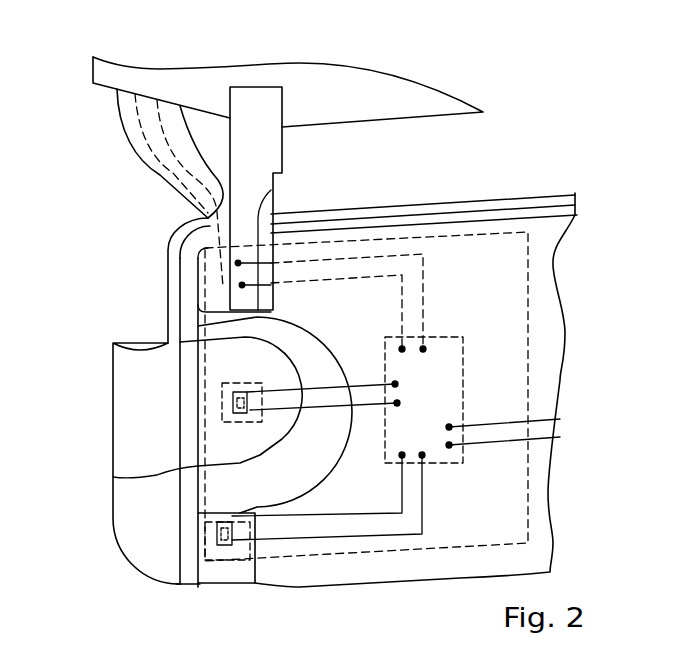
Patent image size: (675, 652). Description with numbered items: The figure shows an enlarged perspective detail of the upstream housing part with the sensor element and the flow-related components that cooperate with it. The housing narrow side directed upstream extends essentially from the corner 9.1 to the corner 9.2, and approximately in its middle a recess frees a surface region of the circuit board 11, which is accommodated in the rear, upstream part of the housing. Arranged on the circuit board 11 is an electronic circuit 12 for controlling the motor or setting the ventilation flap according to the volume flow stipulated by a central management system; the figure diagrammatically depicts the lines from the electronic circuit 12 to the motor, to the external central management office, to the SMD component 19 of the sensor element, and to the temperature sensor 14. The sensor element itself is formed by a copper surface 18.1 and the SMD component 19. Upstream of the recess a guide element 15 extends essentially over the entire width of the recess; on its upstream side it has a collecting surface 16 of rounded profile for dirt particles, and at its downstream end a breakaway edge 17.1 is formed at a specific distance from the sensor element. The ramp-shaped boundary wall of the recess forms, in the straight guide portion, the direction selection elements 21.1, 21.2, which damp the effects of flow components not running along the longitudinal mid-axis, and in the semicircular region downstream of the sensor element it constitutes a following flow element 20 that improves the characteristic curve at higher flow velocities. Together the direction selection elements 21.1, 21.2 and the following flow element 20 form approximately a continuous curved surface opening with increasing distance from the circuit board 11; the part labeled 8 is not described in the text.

The handle 8 is at (200, 88).
The corner 9.1 is at (185, 240).
The corner 9.2 is at (182, 585).
The circuit board 11 is at (470, 527).
The electronic circuit 12 is at (433, 357).
The temperature sensor 14 is at (220, 542).
The guide element 15 is at (133, 462).
The collecting surface 16 is at (105, 517).
The breakaway edge 17.1 is at (180, 440).
The copper surface 18.1 is at (232, 418).
The SMD component 19 is at (233, 403).
The following flow element 20 is at (328, 432).
The direction selection element 21.1 is at (235, 488).
The direction selection element 21.2 is at (242, 332).